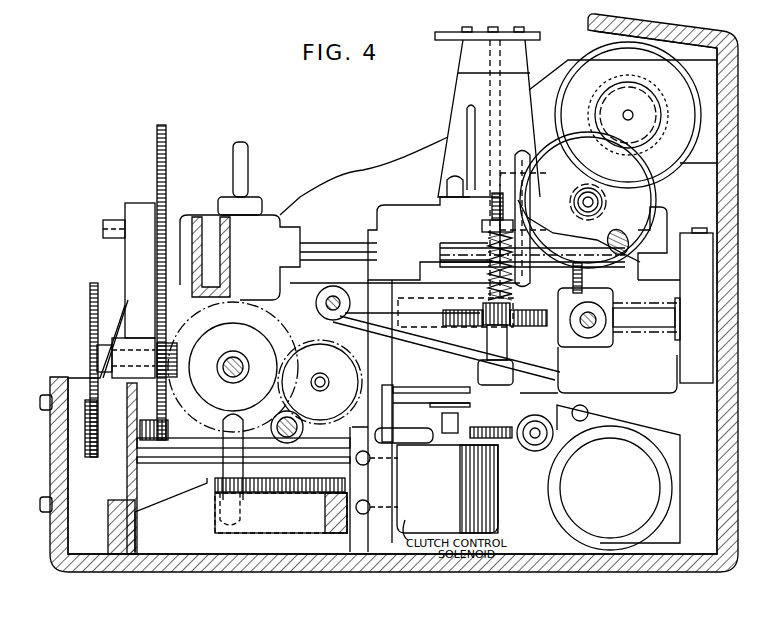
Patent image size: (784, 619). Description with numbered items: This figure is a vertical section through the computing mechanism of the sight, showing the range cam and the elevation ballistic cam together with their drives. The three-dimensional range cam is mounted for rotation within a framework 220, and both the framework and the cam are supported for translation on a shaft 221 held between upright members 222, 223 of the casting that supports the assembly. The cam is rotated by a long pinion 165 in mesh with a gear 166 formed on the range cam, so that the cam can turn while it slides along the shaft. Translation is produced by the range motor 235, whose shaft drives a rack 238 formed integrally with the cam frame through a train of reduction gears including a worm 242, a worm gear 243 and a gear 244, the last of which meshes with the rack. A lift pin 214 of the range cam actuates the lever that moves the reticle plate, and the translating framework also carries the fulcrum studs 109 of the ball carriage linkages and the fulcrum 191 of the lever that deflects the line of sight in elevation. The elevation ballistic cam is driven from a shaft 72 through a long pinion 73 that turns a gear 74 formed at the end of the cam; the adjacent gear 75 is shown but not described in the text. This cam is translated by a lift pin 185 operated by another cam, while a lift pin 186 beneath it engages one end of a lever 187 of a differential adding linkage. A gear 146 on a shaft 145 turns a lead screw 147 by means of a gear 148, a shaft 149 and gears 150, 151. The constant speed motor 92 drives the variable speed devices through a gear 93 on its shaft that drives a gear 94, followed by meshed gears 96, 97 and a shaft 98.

The shaft 72 is at (297, 425).
The long pinion 73 is at (290, 414).
The gear 74 is at (236, 320).
The gear 75 is at (345, 362).
The constant speed motor 92 is at (687, 100).
The gear 93 is at (655, 99).
The gear 94 is at (628, 118).
The gear 96 is at (598, 196).
The gear 97 is at (638, 210).
The shaft 98 is at (622, 233).
The fulcrum stud 109 is at (583, 321).
The shaft 145 is at (113, 222).
The gear 146 is at (166, 148).
The lead screw 147 is at (162, 428).
The gear 148 is at (172, 342).
The shaft 149 is at (122, 320).
The gear 150 is at (90, 300).
The gear 151 is at (95, 458).
The long pinion 165 is at (645, 272).
The gear 166 is at (582, 279).
The lift pin 185 is at (233, 358).
The lift pin 186 is at (222, 492).
The lever 187 is at (222, 524).
The fulcrum 191 is at (333, 296).
The lift pin 214 is at (522, 152).
The framework 220 is at (630, 360).
The shaft 221 is at (665, 322).
The upright member 222 is at (386, 366).
The upright member 223 is at (692, 262).
The range motor 235 is at (630, 450).
The rack 238 is at (545, 310).
The worm 242 is at (540, 452).
The worm gear 243 is at (500, 440).
The gear 244 is at (493, 318).